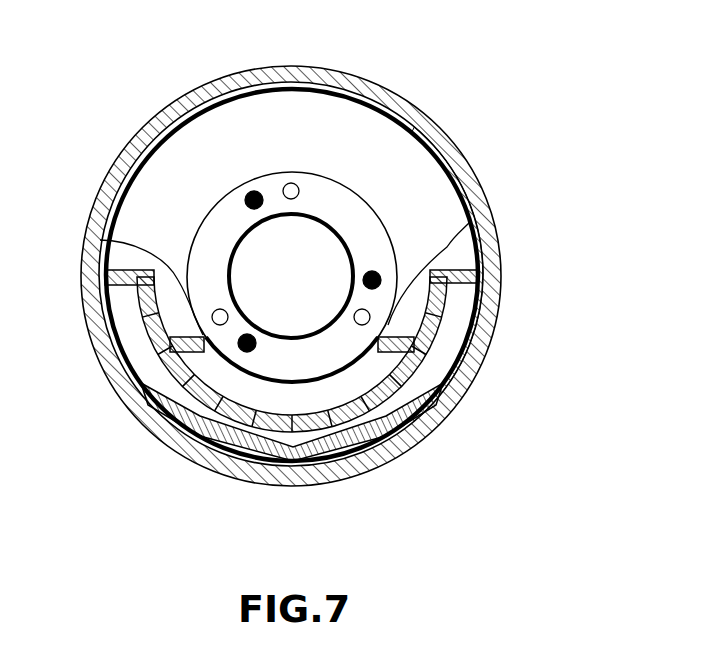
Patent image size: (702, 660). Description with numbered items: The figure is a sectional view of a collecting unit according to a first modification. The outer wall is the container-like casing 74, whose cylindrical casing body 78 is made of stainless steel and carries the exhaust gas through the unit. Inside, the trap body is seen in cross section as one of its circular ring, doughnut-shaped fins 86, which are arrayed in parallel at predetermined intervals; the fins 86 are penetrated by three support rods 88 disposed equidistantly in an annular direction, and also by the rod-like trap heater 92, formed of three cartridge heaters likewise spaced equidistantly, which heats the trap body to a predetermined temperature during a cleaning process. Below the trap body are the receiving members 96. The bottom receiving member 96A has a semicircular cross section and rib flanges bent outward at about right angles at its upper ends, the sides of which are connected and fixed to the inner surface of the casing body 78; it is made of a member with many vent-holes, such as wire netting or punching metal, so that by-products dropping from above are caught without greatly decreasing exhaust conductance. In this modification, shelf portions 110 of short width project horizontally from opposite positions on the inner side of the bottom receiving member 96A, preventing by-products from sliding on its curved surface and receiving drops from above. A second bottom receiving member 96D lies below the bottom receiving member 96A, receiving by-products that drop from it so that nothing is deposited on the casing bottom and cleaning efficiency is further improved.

The casing 74 is at (476, 155).
The casing body 78 is at (432, 118).
The fins 86 is at (328, 178).
The support rods 88 is at (290, 183).
The trap heater 92 is at (249, 193).
The receiving members 96 is at (361, 416).
The bottom receiving member 96A is at (447, 313).
The second bottom receiving member 96D is at (377, 437).
The shelf portions 110 is at (100, 240).